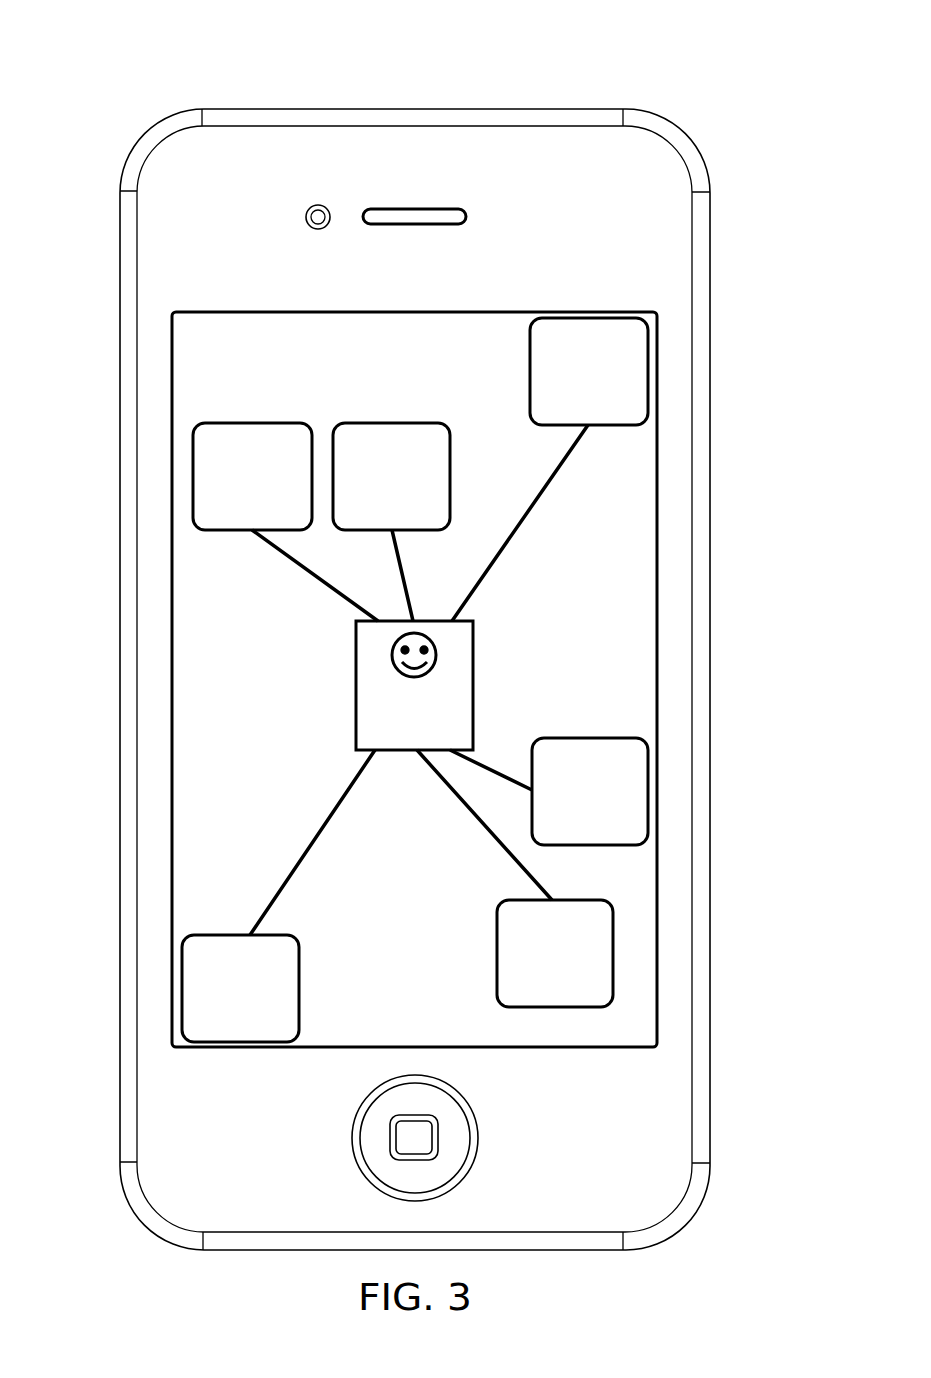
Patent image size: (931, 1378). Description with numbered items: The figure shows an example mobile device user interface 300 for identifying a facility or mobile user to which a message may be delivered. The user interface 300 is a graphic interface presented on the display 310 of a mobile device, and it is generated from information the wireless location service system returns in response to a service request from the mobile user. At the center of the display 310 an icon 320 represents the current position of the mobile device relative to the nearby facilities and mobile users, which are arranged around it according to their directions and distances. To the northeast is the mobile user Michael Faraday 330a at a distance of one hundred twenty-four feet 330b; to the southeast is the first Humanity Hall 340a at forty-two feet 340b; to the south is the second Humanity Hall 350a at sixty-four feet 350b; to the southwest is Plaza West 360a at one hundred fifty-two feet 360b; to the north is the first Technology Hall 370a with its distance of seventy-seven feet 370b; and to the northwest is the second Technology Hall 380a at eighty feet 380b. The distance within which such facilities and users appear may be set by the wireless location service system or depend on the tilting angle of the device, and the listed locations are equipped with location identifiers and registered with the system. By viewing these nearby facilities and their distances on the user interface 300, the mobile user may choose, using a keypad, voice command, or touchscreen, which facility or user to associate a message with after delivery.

The mobile device user interface 300 is at (419, 630).
The display 310 is at (285, 108).
The icon 320 is at (346, 683).
The mobile user Michael Faraday 330a is at (640, 345).
The distance of 124 feet 330b is at (640, 400).
The Humanity Hall 1 340a is at (640, 762).
The distance of 42 feet 340b is at (640, 820).
The Humanity Hall 2 350a is at (507, 937).
The distance of 64 feet 350b is at (507, 985).
The Plaza West 360a is at (197, 957).
The distance of 152 feet 360b is at (197, 1012).
The Technology Hall 1 370a is at (392, 423).
The Technology Hall 1 distance (77 feet) 370b is at (435, 510).
The Technology Hall 2 location name 380a is at (205, 462).
The distance of 80 feet 380b is at (205, 507).